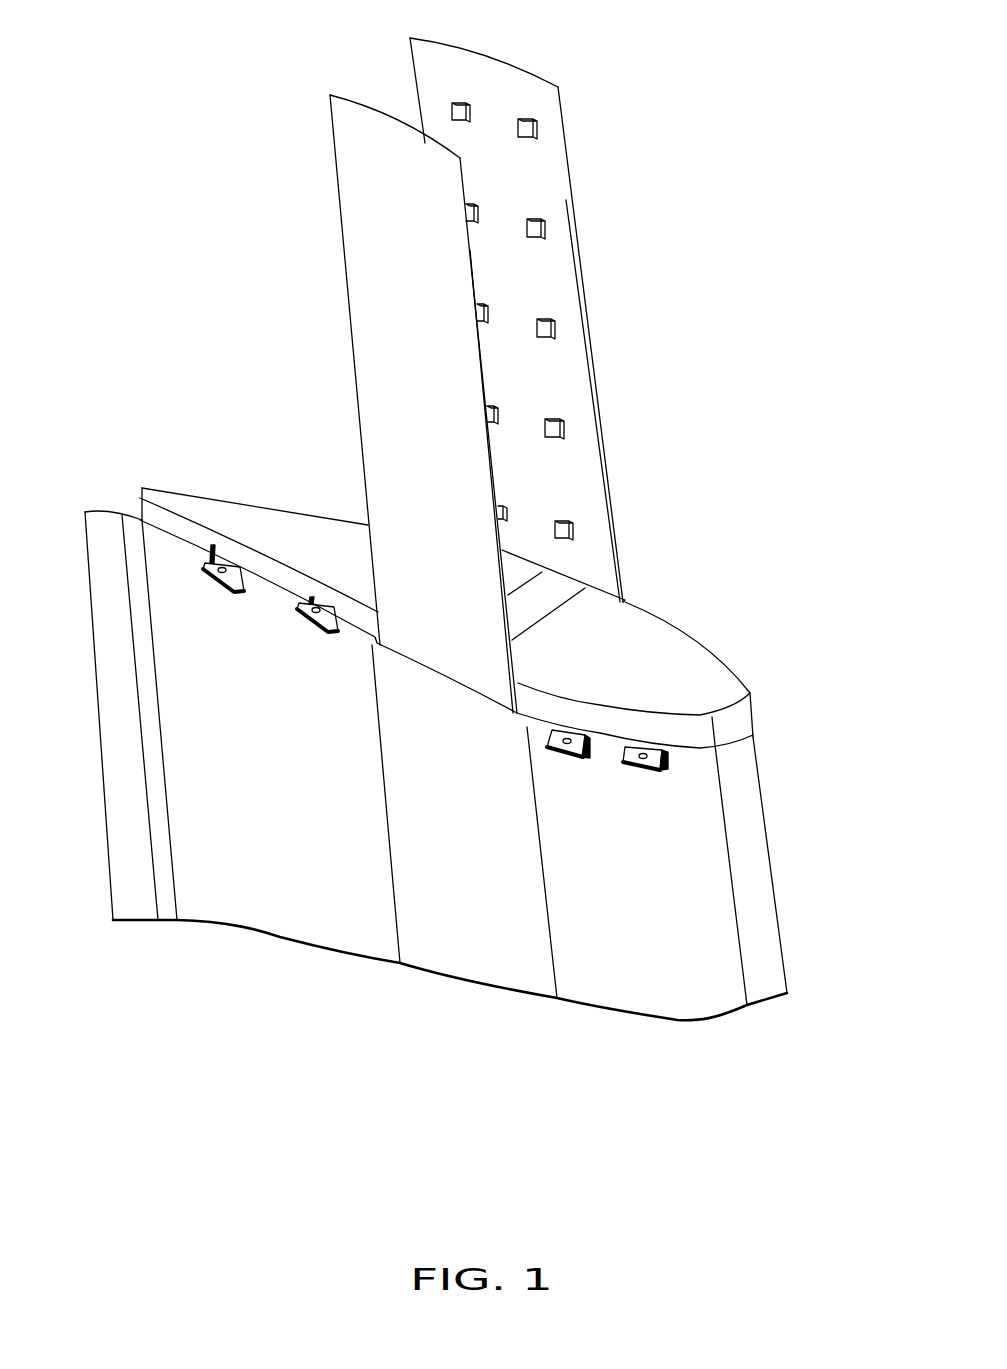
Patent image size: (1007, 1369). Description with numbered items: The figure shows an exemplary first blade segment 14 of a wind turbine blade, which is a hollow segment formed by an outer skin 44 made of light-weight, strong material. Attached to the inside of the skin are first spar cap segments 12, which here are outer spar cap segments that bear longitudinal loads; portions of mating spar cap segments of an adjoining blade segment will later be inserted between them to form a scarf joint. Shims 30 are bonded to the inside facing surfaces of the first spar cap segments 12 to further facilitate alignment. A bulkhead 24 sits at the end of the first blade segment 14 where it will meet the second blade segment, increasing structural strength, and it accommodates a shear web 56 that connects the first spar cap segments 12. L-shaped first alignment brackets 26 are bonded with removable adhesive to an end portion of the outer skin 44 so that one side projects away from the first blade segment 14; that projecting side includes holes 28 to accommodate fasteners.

The first spar cap segment 12 is at (350, 333).
The first blade segment 14 is at (745, 828).
The bulkhead 24 is at (727, 660).
The first alignment bracket 26 is at (205, 578).
The hole 28 is at (308, 633).
The shim 30 is at (465, 121).
The outer skin 44 is at (122, 515).
The shear web 56 is at (547, 590).